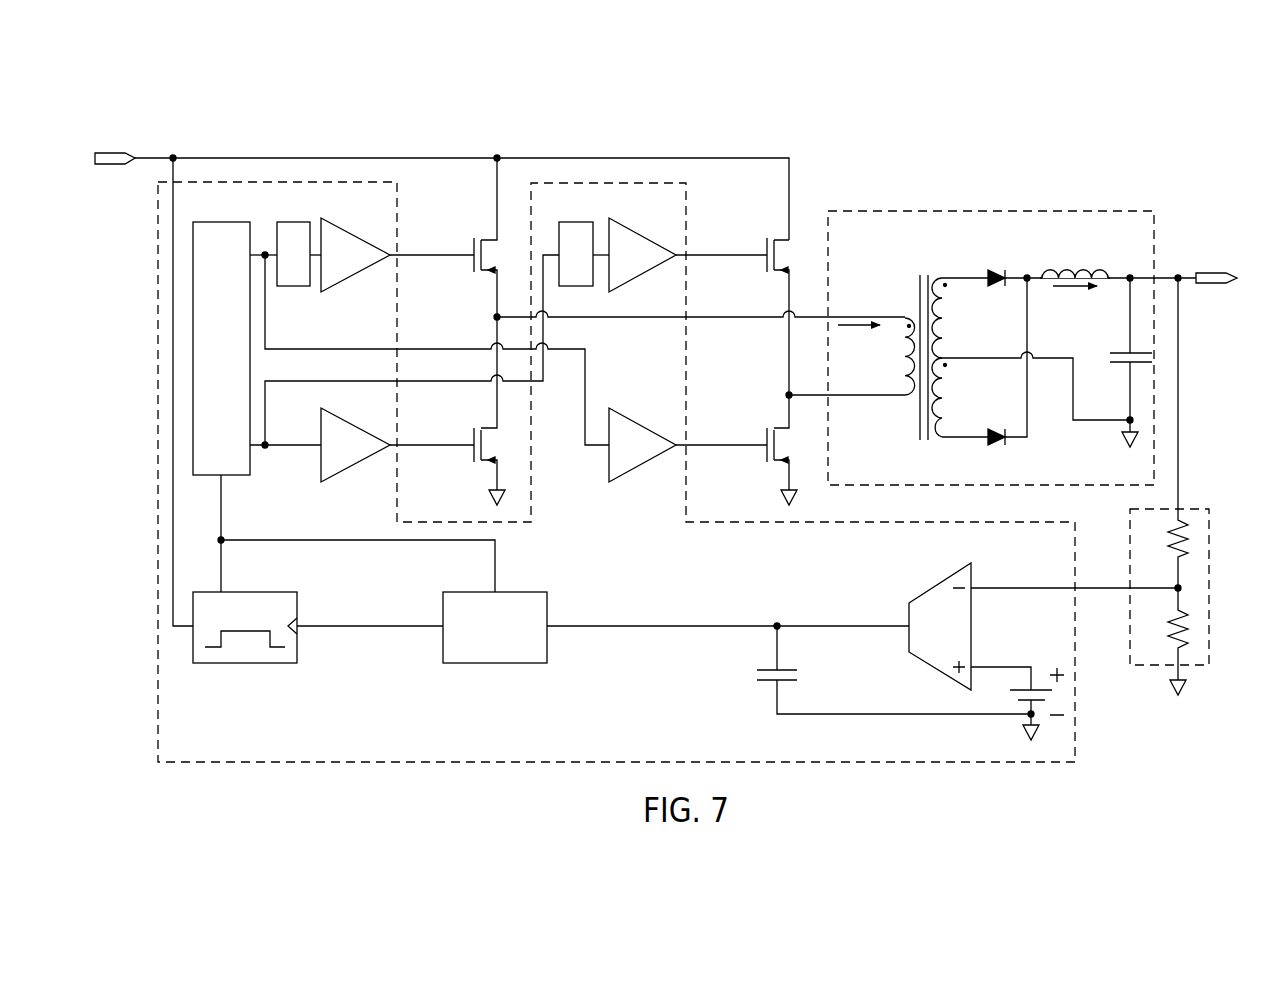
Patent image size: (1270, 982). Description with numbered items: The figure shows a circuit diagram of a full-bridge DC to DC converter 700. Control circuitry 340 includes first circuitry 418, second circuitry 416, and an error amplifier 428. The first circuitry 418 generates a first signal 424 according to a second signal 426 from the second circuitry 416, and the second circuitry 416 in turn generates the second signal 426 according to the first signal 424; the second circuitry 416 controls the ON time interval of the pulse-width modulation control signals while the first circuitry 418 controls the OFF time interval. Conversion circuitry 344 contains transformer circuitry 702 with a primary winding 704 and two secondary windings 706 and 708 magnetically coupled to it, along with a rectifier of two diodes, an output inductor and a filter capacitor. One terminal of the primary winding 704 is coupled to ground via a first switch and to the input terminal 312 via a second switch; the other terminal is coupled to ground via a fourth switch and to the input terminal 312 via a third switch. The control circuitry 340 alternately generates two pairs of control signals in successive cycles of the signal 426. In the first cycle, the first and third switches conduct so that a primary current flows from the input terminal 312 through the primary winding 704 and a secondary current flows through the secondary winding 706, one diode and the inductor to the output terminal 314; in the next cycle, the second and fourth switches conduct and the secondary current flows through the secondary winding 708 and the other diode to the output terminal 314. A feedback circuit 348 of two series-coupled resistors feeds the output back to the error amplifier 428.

The full-bridge converter 700 is at (1142, 132).
The input terminal 312 is at (116, 166).
The output terminal 314 is at (1203, 287).
The control circuitry 340 is at (158, 262).
The conversion circuitry 344 is at (1025, 211).
The feedback circuit 348 is at (1152, 665).
The transformer circuitry 702 is at (927, 346).
The primary winding 704 is at (912, 318).
The secondary winding 706 is at (942, 275).
The secondary winding 708 is at (940, 437).
The second circuitry 416 is at (297, 607).
The first circuitry 418 is at (495, 627).
The first signal 424 is at (402, 626).
The second signal 426 is at (221, 580).
The error amplifier 428 is at (925, 592).